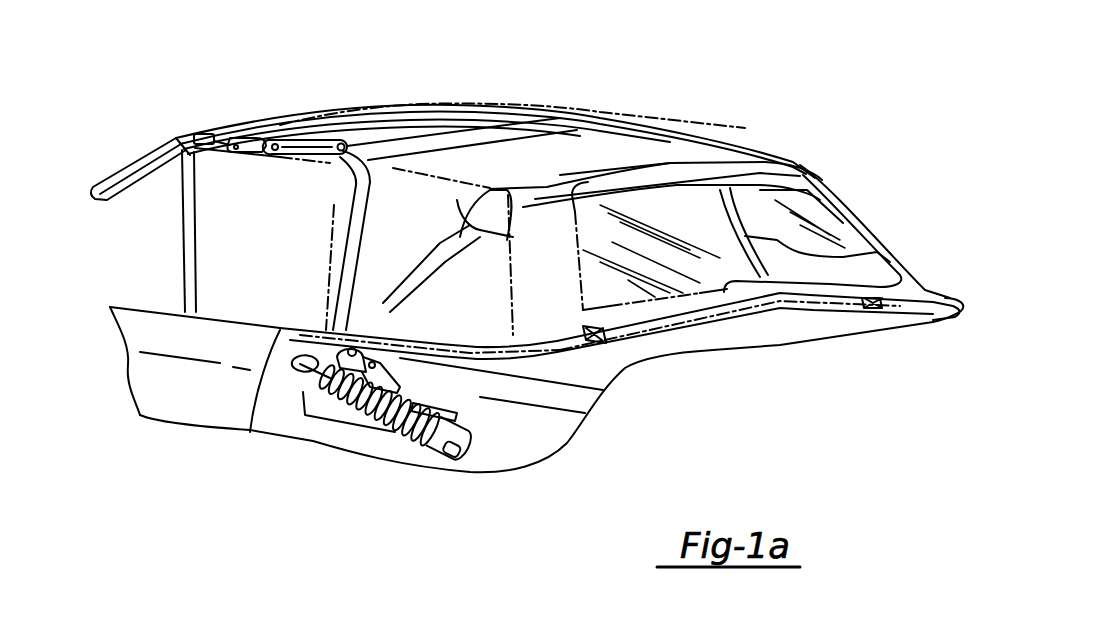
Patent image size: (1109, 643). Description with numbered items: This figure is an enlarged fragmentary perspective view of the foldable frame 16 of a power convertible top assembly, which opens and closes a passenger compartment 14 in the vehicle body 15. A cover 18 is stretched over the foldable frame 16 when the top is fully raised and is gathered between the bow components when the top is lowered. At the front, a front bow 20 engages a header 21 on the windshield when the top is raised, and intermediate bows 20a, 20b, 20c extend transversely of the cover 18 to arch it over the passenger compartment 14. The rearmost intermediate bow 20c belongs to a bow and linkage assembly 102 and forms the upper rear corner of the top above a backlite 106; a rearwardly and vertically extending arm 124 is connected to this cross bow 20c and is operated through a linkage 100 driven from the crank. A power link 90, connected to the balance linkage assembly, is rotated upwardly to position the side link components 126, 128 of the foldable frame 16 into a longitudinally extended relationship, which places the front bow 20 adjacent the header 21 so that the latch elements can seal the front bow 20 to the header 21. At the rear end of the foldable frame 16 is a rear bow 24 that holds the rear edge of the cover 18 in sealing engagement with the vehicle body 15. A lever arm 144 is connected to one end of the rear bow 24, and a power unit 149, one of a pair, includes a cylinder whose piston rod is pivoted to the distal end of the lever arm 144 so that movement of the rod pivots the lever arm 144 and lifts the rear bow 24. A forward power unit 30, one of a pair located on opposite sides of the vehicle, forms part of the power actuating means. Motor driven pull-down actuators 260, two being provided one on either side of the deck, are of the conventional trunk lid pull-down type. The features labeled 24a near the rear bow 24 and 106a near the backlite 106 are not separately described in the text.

The passenger compartment 14 is at (255, 277).
The vehicle body 15 is at (221, 357).
The foldable frame 16 is at (418, 128).
The cover 18 is at (728, 150).
The front bow 20 is at (313, 112).
The intermediate bow 20a is at (390, 110).
The intermediate bow 20b is at (490, 133).
The intermediate bow 20c is at (647, 167).
The header 21 is at (180, 138).
The rear bow 24 is at (467, 340).
The rear belt rail 24a is at (742, 308).
The forward power unit 30 is at (472, 413).
The power link 90 is at (369, 201).
The linkage 100 is at (399, 378).
The bow and linkage assembly 102 is at (441, 244).
The backlite 106 is at (610, 207).
The rear window 106a is at (765, 193).
The rearwardly and vertically extending arm 124 is at (383, 303).
The side link component 126 is at (332, 154).
The side link component 128 is at (250, 152).
The lever arm 144 is at (268, 400).
The power unit 149 is at (377, 422).
The motor driven pull-down actuator 260 is at (607, 335).